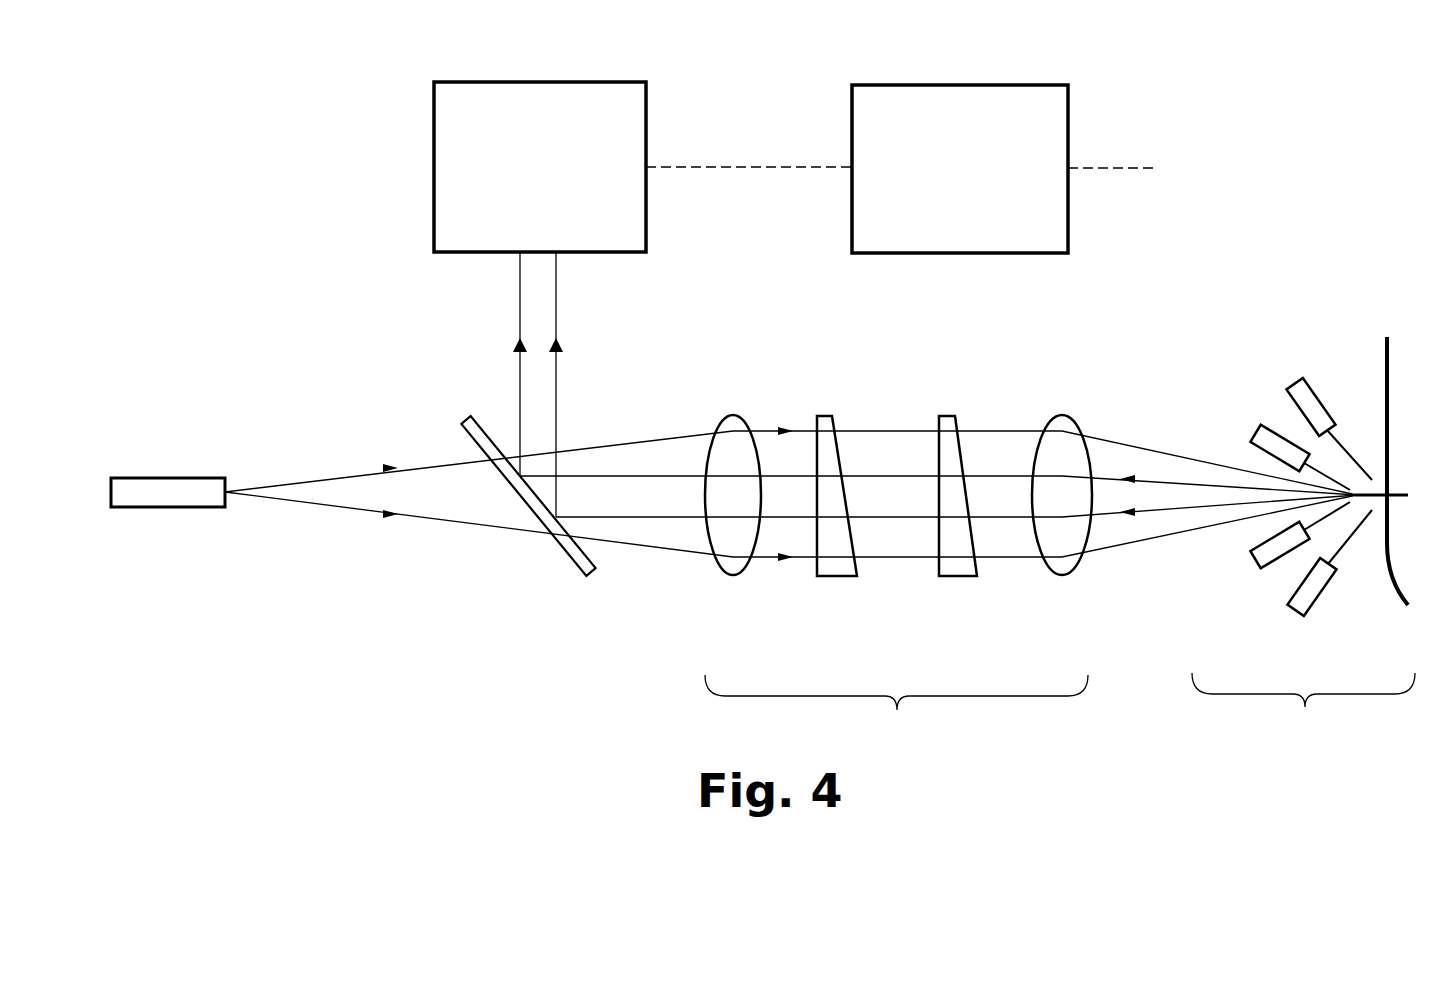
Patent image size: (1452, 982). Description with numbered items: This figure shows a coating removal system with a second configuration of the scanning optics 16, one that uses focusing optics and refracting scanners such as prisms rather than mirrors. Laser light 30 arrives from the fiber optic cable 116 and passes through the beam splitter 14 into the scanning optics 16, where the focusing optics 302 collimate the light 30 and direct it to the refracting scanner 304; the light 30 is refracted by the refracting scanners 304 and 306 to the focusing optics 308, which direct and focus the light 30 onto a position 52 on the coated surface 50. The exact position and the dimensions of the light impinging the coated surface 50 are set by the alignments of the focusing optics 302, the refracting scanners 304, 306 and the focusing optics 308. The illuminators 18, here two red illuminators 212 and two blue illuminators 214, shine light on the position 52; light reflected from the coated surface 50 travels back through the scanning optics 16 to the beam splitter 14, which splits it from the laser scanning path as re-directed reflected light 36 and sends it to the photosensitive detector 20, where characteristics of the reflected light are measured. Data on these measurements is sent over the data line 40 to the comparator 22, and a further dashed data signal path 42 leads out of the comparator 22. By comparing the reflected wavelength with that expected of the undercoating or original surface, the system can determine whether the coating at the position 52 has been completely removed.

The photosensitive detector 20 is at (540, 82).
The comparator 22 is at (955, 85).
The data line 40 is at (750, 167).
The comparator output signal line 42 is at (1103, 168).
The re-directed reflected light 36 is at (520, 304).
The beam splitter 14 is at (562, 554).
The fiber optic cable 116 is at (160, 478).
The light 30 is at (344, 472).
The focusing optics 302 is at (733, 575).
The refracting scanner 304 is at (836, 576).
The refracting scanner 306 is at (957, 576).
The focusing optics 308 is at (1063, 575).
The scanning optics 16 is at (896, 707).
The illuminators 18 is at (1303, 707).
The coated surface 50 is at (1382, 350).
The position 52 is at (1397, 492).
The red illuminators 212 is at (1256, 436).
The blue illuminators 214 is at (1294, 380).